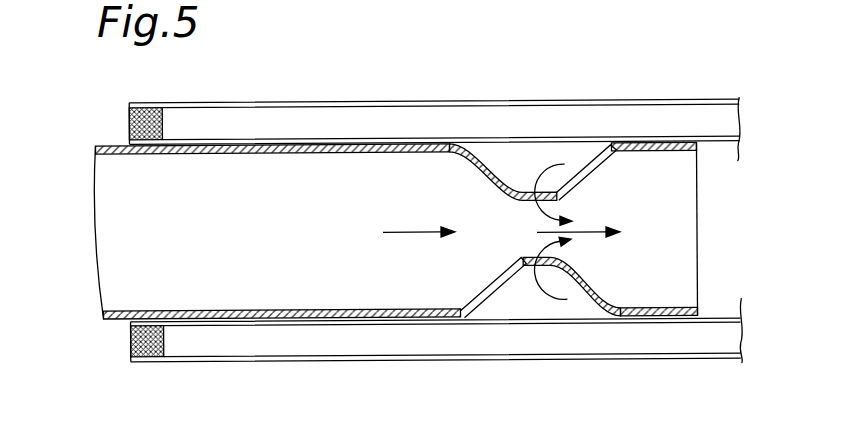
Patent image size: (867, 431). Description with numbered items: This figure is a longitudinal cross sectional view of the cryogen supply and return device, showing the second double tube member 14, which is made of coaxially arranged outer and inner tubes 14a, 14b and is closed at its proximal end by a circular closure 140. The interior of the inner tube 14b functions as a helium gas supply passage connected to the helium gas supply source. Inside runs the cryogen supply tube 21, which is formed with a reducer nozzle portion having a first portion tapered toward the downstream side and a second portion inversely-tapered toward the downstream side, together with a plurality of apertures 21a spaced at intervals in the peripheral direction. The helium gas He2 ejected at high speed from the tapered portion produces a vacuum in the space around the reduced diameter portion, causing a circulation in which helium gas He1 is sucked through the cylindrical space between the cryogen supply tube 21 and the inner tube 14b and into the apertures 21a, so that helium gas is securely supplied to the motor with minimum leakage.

The second double tube member 14 is at (457, 259).
The outer tube 14a is at (612, 360).
The inner tube 14b is at (708, 316).
The circular closure 140 is at (130, 340).
The cryogen supply tube 21 is at (396, 280).
The apertures 21a is at (525, 278).
The helium gas He1 is at (590, 230).
The helium gas He2 is at (540, 190).